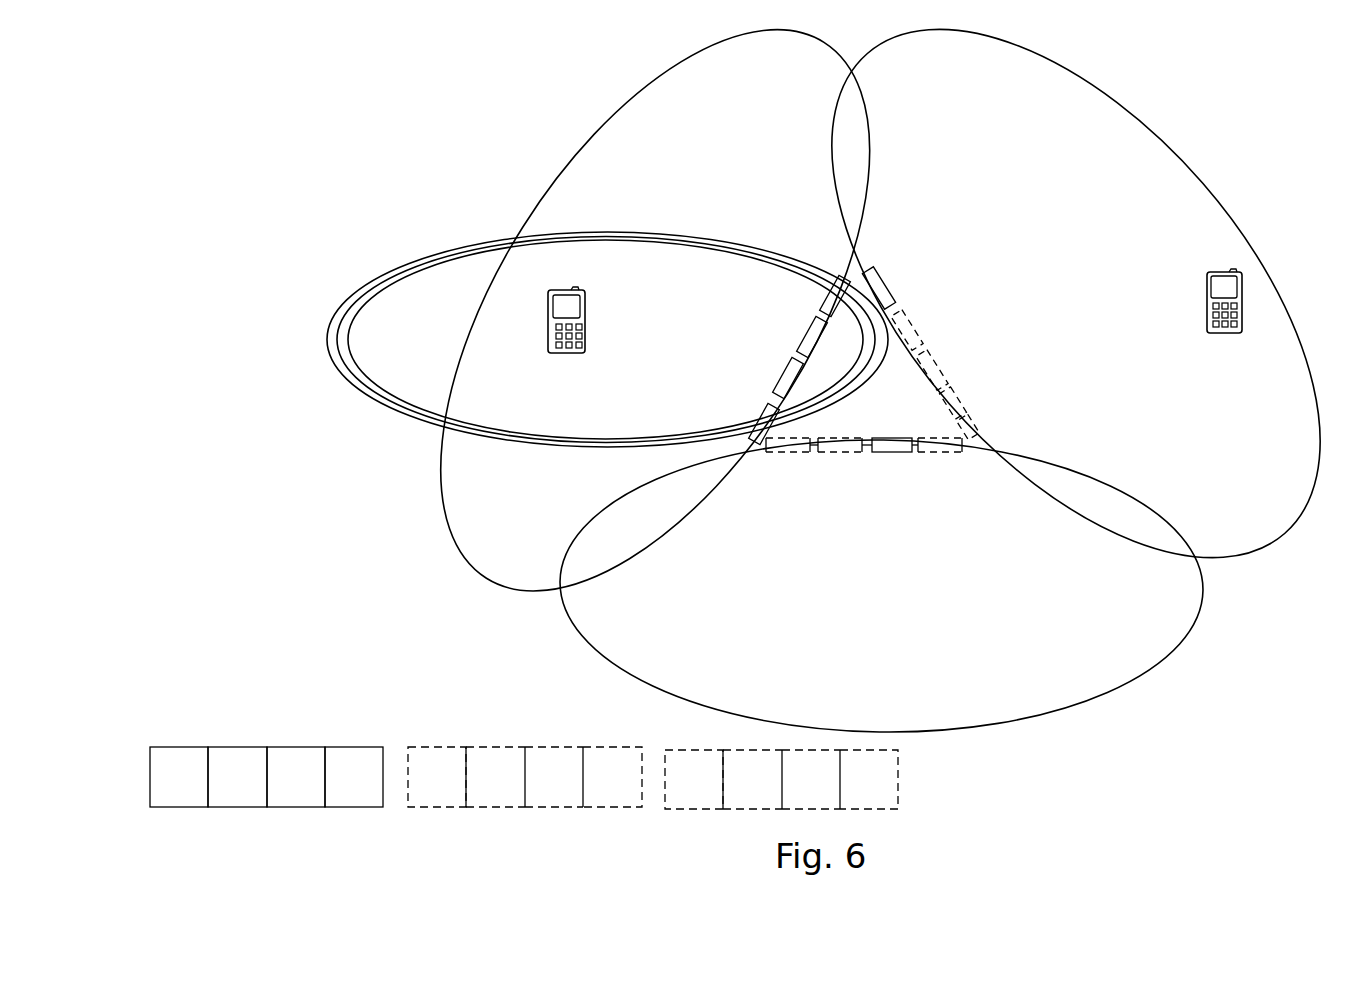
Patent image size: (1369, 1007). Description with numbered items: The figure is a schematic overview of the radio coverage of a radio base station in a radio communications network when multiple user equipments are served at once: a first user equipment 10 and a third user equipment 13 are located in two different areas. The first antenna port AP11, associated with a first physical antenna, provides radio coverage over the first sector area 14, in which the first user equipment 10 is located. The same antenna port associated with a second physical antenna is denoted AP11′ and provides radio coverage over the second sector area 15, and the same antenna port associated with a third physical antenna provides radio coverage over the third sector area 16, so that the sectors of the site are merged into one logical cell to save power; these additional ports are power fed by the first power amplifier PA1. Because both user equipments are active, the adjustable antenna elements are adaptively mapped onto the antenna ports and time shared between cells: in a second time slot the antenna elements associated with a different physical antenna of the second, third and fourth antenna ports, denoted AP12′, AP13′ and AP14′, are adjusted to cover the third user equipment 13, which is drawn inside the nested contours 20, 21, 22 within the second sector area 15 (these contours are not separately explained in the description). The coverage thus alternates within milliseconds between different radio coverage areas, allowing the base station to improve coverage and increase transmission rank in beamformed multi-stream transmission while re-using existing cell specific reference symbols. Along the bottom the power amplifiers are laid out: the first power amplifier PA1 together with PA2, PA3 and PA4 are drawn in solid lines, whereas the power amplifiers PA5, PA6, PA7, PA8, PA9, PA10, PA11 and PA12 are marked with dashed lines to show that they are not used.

The first user equipment 10 is at (1233, 325).
The third user equipment 13 is at (546, 343).
The first sector area 14 is at (992, 174).
The second sector area 15 is at (724, 174).
The third sector area 16 is at (899, 603).
The inner coverage zone 20 is at (667, 323).
The middle coverage zone 21 is at (641, 380).
The outer coverage zone 22 is at (606, 427).
The first antenna port AP11 is at (891, 296).
The seventh antenna port AP11′ is at (792, 369).
The second antenna port AP12′ is at (811, 326).
The third antenna port AP13′ is at (823, 292).
The fourth antenna port AP14′ is at (770, 413).
The first power amplifier PA1 is at (179, 777).
The physical address block PA2 is at (237, 777).
The physical address block PA3 is at (296, 777).
The physical address block PA4 is at (354, 777).
The power amplifier PA5 is at (437, 777).
The power amplifier PA6 is at (495, 777).
The power amplifier PA7 is at (554, 777).
The power amplifier PA8 is at (612, 777).
The power amplifier PA9 is at (694, 779).
The power amplifier PA10 is at (752, 779).
The power amplifier PA11 is at (811, 779).
The power amplifier PA12 is at (869, 779).